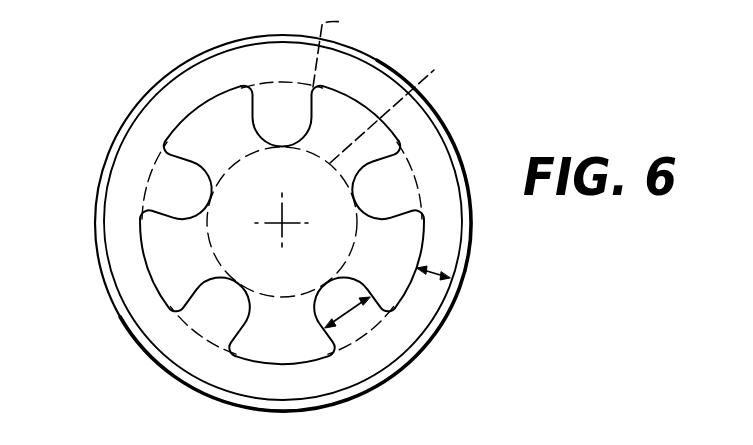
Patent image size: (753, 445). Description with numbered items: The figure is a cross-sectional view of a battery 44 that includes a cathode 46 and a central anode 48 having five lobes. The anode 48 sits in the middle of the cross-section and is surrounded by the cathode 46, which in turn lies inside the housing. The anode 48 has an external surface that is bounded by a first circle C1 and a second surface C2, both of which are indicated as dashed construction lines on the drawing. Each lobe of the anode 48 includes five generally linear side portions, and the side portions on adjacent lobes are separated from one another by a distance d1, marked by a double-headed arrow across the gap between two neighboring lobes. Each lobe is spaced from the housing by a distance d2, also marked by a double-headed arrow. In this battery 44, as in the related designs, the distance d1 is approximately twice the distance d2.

The battery 44 is at (125, 58).
The cathode 46 is at (150, 129).
The anode 48 is at (178, 253).
The first circle C1 is at (341, 46).
The second surface C2 is at (396, 110).
The distance between side portions of adjacent lobes d1 is at (348, 313).
The distance from lobe to housing d2 is at (432, 274).